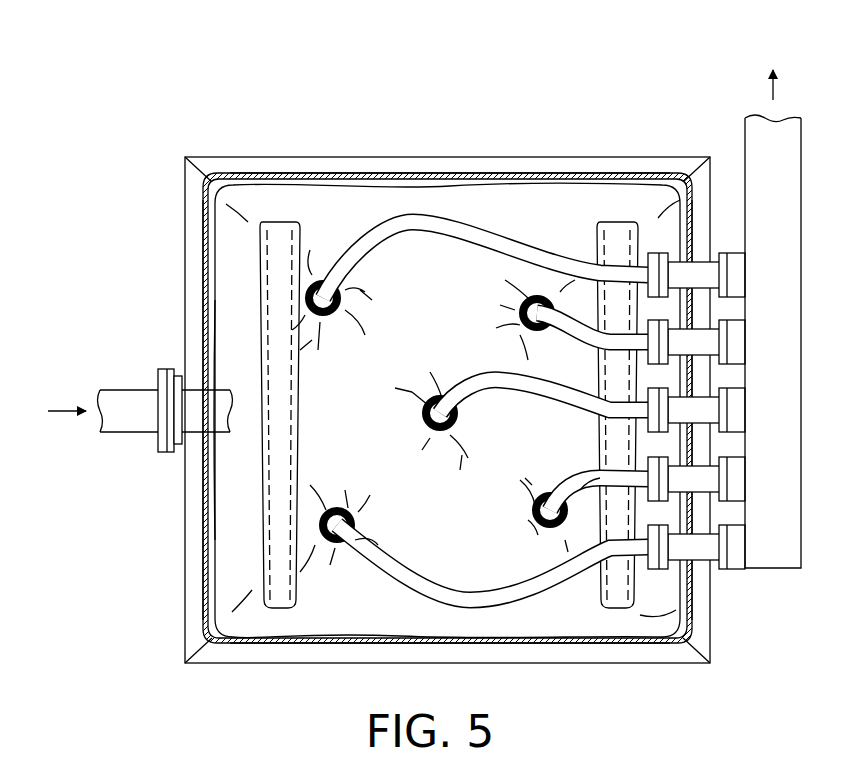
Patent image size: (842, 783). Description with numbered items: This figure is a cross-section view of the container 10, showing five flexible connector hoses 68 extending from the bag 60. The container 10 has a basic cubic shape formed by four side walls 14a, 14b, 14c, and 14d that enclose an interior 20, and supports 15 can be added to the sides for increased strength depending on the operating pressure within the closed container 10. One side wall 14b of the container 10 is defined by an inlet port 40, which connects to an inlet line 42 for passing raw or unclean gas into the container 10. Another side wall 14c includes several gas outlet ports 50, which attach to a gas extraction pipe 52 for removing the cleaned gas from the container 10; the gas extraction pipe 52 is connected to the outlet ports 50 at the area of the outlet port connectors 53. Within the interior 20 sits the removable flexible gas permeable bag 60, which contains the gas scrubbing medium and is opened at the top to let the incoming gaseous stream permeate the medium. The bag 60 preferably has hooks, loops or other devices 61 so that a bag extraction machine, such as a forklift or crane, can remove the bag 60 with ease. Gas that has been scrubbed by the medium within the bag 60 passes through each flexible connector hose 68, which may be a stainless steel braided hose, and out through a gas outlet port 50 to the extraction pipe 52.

The container 10 is at (414, 370).
The side wall 14a is at (203, 262).
The side wall 14b is at (331, 175).
The side wall 14c is at (694, 595).
The side wall 14d is at (615, 650).
The supports 15 is at (185, 195).
The interior 20 is at (213, 618).
The inlet port 40 is at (195, 385).
The inlet line 42 is at (130, 388).
The gas outlet port 50 is at (672, 255).
The gas extraction pipe 52 is at (745, 128).
The outlet port connectors 53 is at (734, 252).
The bag 60 is at (233, 510).
The hooks, loops or other devices 61 is at (280, 222).
The flexible connector hose 68 is at (428, 222).